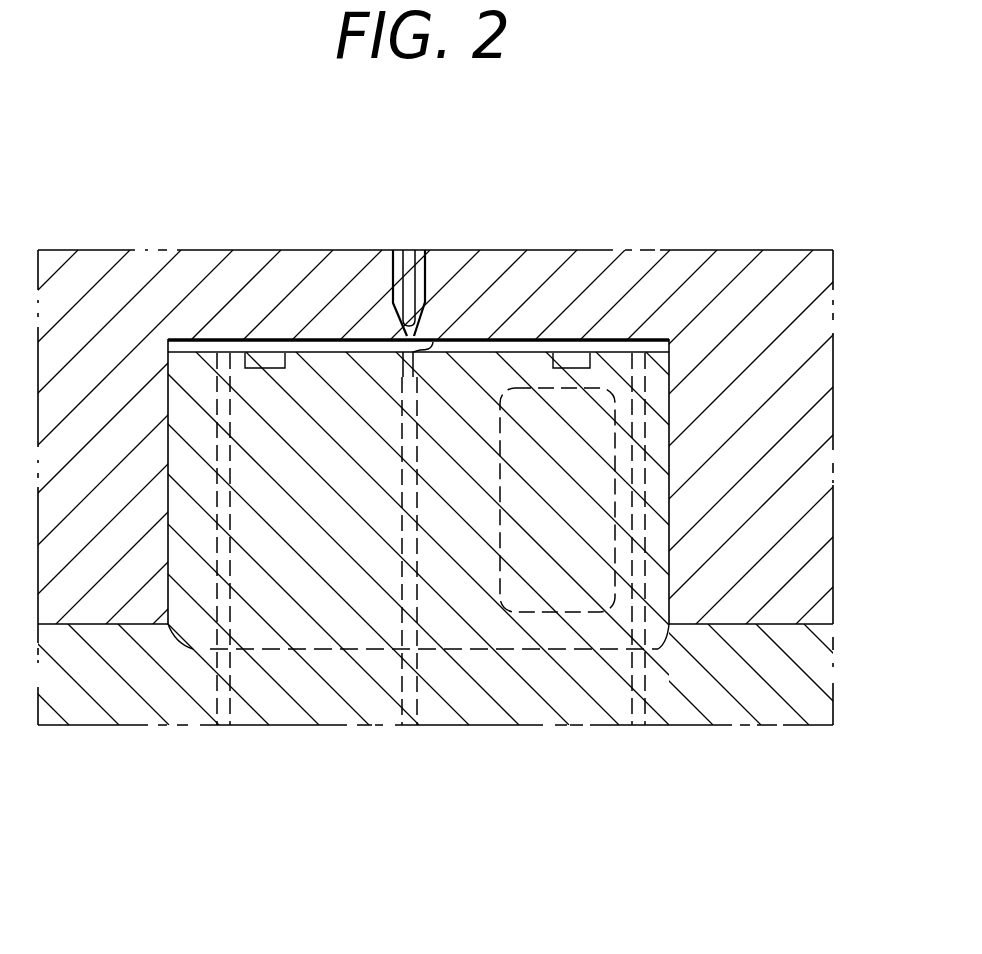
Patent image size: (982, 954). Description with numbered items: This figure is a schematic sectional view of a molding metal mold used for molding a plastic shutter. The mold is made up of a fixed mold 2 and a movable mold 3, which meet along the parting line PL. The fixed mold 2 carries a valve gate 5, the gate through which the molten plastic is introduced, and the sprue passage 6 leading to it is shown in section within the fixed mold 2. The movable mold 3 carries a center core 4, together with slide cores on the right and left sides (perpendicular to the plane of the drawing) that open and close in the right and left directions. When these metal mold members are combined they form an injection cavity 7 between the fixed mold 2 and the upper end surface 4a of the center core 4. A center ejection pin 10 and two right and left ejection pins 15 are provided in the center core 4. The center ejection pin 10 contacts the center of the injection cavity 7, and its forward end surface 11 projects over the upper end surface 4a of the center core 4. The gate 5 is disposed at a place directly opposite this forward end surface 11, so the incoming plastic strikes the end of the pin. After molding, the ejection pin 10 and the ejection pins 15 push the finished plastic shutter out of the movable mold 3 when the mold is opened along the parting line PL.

The fixed mold 2 is at (575, 267).
The movable mold 3 is at (125, 697).
The center core 4 is at (333, 403).
The upper end surface 4a is at (467, 337).
The valve gate 5 is at (405, 337).
The sprue channel 6 is at (409, 335).
The injection cavity 7 is at (205, 340).
The center ejection pin 10 is at (415, 600).
The forward end surface 11 is at (433, 339).
The ejection pins 15 is at (230, 663).
The parting line PL is at (770, 624).